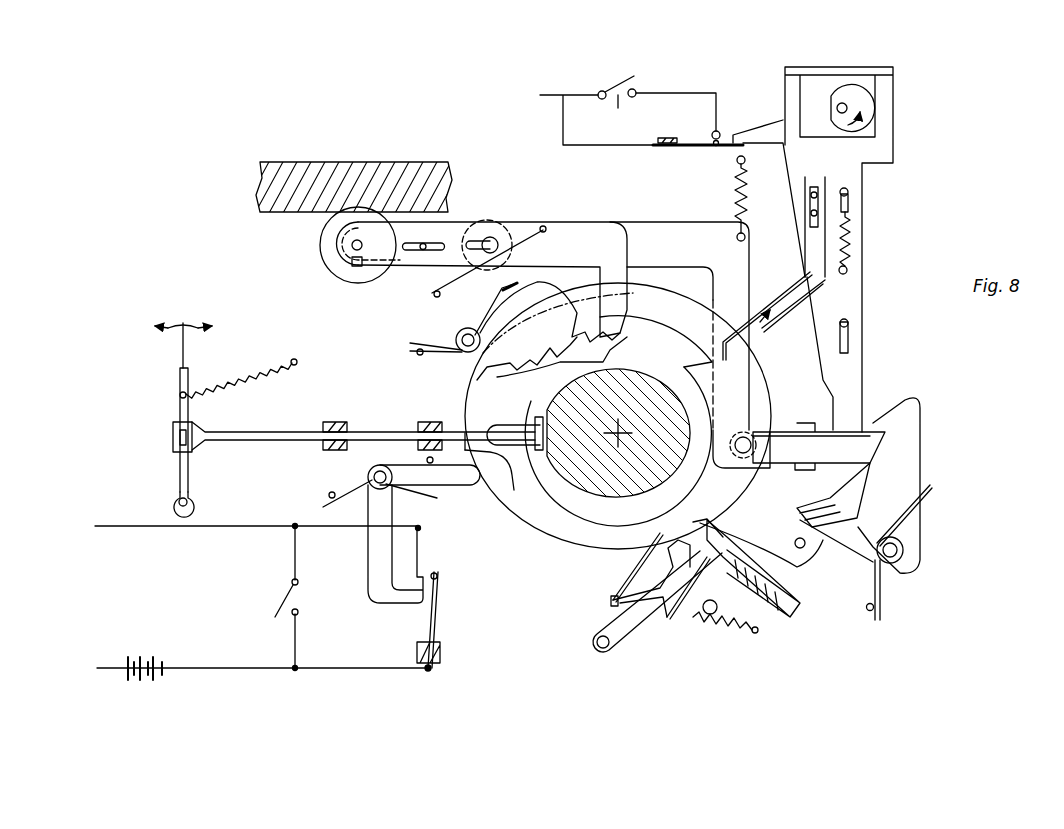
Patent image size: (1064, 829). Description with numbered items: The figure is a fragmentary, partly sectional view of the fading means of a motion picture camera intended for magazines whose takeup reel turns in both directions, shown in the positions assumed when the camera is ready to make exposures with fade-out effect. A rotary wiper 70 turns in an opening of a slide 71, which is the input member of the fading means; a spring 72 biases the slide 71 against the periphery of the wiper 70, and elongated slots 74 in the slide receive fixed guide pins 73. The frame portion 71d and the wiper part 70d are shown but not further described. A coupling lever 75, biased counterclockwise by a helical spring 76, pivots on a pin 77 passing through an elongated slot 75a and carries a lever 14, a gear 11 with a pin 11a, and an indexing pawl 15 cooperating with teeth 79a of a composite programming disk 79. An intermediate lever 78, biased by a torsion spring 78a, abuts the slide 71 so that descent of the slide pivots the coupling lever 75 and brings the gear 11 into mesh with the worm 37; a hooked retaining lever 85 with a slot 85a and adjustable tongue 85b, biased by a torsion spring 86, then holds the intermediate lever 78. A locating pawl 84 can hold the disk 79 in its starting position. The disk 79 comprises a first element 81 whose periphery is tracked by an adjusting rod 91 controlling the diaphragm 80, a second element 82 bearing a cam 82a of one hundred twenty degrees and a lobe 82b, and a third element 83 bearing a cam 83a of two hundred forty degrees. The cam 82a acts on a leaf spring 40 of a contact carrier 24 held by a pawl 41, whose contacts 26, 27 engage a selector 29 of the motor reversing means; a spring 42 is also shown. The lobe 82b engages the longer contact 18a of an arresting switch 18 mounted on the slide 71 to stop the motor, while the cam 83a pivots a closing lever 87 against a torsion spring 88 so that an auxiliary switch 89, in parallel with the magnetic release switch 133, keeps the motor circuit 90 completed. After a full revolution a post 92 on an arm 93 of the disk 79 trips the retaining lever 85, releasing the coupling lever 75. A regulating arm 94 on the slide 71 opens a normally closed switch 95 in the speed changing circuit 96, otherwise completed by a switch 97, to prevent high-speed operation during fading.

The worm 37 is at (300, 183).
The gear 11 is at (322, 244).
The pin of the gear 11a is at (353, 259).
The lever 14 is at (365, 272).
The pin 77 is at (418, 254).
The elongated slot 75a is at (429, 254).
The locating pawl 84 is at (513, 310).
The teeth of the programming disk 79a is at (485, 362).
The indexing pawl 15 is at (573, 238).
The coupling lever 75 is at (662, 228).
The helical spring 76 is at (746, 205).
The cam 82a is at (677, 323).
The contact of the arresting switch 18a is at (743, 333).
The arresting switch 18 is at (774, 316).
The guide pins 73 is at (851, 193).
The elongated slots 74 is at (852, 204).
The slide 71 is at (858, 236).
The spring 72 is at (850, 265).
The housing frame 71d is at (808, 80).
The cam pin 70d is at (855, 103).
The wiper 70 is at (862, 118).
The regulating arm 94 is at (765, 131).
The switch 97 is at (657, 103).
The speed changing circuit 96 is at (607, 147).
The normally closed switch 95 is at (713, 148).
The diaphragm 80 is at (177, 408).
The adjusting rod 91 is at (298, 432).
The cam 83a is at (468, 410).
The lobe 82b is at (508, 424).
The torsion spring 88 is at (362, 492).
The closing lever 87 is at (455, 480).
The programming disk 79 is at (503, 494).
The second disk-shaped element 82 is at (553, 486).
The third disk-shaped element 83 is at (548, 511).
The first disk-shaped element 81 is at (592, 470).
The torsion spring 78a is at (790, 430).
The intermediate lever 78 is at (853, 452).
The retaining lever 85 is at (812, 521).
The adjustable tongue 85b is at (868, 523).
The post 92 is at (795, 541).
The arm 93 is at (807, 562).
The slot 85a is at (853, 560).
The torsion spring 86 is at (882, 591).
The pawl 41 is at (655, 557).
The leaf spring 40 is at (612, 600).
The contact 26 is at (620, 603).
The contact carrier 24 is at (625, 641).
The contact 27 is at (678, 613).
The spring 42 is at (730, 631).
The selector 29 is at (770, 618).
The release element 133 is at (277, 594).
The auxiliary switch 89 is at (440, 615).
The motor circuit 90 is at (430, 669).